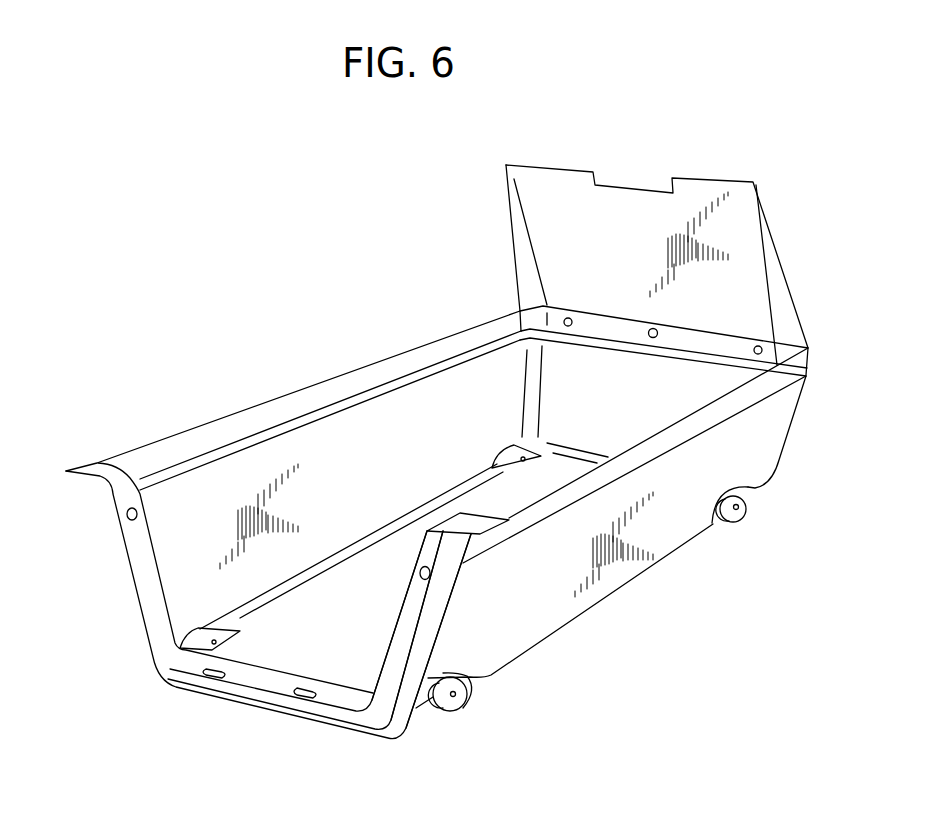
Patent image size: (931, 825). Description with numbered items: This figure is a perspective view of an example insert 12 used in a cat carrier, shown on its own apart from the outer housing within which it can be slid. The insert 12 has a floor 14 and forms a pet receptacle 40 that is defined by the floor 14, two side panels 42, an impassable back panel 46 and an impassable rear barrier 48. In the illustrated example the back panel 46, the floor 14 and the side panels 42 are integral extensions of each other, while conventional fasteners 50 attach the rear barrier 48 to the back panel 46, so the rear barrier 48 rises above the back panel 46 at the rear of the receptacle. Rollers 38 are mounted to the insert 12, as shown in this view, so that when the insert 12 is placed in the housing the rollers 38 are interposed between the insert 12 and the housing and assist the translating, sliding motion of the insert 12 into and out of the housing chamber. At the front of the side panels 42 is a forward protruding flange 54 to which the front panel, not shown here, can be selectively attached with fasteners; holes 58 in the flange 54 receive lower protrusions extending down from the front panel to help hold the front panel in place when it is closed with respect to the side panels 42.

The insert 12 is at (176, 225).
The floor 14 is at (381, 571).
The rollers 38 is at (733, 520).
The pet receptacle 40 is at (195, 562).
The side panels 42 is at (410, 412).
The back panel 46 is at (606, 377).
The rear barrier 48 is at (553, 200).
The fasteners 50 is at (658, 334).
The forward protruding flange 54 is at (412, 610).
The holes 58 is at (304, 683).